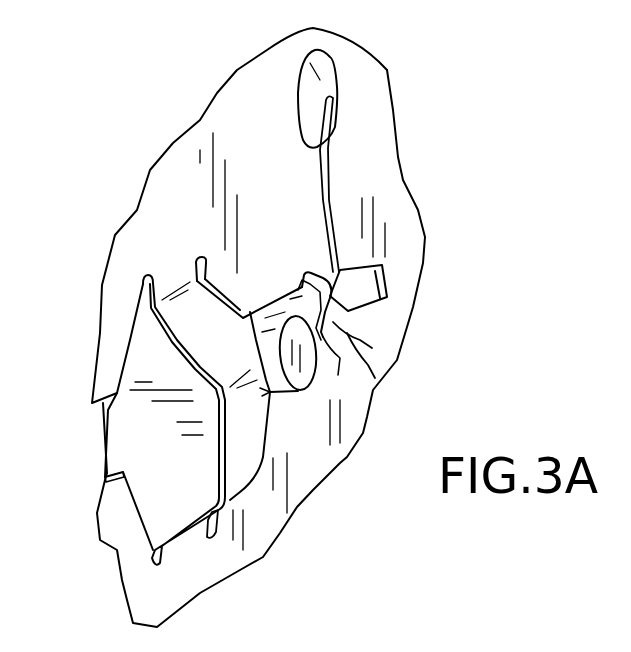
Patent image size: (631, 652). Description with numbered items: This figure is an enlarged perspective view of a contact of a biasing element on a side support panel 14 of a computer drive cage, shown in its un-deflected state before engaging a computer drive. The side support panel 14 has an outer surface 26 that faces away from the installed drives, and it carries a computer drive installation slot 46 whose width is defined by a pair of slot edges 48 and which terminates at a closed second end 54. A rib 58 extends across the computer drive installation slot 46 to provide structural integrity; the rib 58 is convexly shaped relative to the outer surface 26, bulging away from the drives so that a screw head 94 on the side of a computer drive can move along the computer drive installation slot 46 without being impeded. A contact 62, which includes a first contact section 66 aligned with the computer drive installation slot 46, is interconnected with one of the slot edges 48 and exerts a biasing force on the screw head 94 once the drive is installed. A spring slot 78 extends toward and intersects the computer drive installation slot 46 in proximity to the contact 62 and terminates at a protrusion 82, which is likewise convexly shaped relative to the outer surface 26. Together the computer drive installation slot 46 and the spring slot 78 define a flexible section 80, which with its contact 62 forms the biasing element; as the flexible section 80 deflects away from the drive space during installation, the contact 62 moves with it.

The side support panel 14 is at (386, 70).
The outer surface 26 is at (257, 120).
The computer drive installation slot 46 is at (137, 428).
The slot edge 48 is at (263, 303).
The closed second end 54 is at (347, 332).
The rib 58 is at (255, 443).
The contact 62 is at (345, 328).
The first contact section 66 is at (340, 330).
The spring slot 78 is at (327, 170).
The flexible section 80 is at (313, 246).
The protrusion 82 is at (327, 62).
The screw head 94 is at (302, 398).